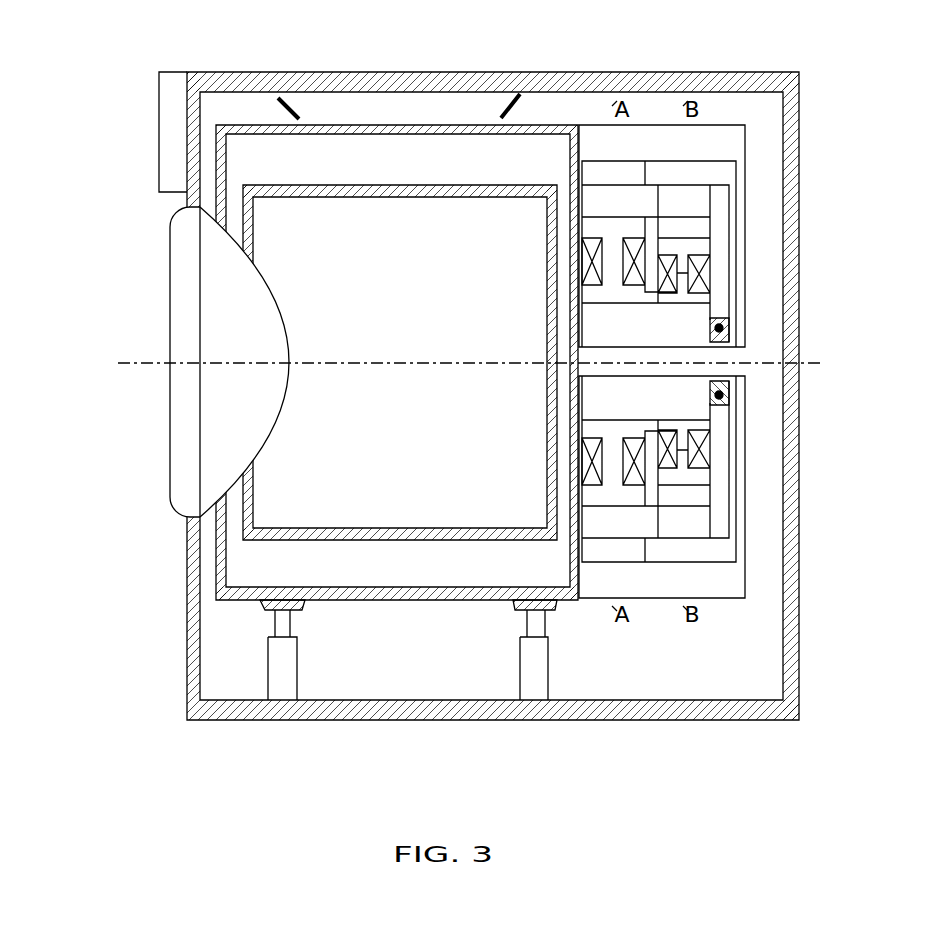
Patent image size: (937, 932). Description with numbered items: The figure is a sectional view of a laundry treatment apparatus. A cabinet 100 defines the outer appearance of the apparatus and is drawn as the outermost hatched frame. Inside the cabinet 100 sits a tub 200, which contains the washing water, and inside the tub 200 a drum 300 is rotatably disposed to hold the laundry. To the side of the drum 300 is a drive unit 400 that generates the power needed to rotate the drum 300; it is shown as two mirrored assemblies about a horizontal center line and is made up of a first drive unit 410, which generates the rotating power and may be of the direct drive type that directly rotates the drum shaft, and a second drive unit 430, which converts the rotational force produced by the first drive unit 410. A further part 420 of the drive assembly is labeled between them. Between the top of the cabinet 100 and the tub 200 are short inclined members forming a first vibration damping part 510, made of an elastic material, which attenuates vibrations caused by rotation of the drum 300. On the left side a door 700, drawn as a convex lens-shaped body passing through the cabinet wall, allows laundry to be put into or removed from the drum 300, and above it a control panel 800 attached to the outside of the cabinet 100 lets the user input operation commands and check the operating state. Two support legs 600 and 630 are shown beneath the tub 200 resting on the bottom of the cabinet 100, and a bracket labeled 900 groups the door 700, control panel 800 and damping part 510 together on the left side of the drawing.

The cabinet 100 is at (318, 74).
The tub 200 is at (401, 126).
The drum 300 is at (455, 188).
The drive unit 400 is at (845, 165).
The first drive unit 410 is at (732, 138).
The coil 420 is at (702, 263).
The second drive unit 430 is at (732, 355).
The first vibration damping part 510 is at (277, 99).
The support leg 600 is at (536, 692).
The support leg 630 is at (283, 664).
The door 700 is at (205, 427).
The control panel 800 is at (170, 132).
The lens module 900 is at (53, 100).